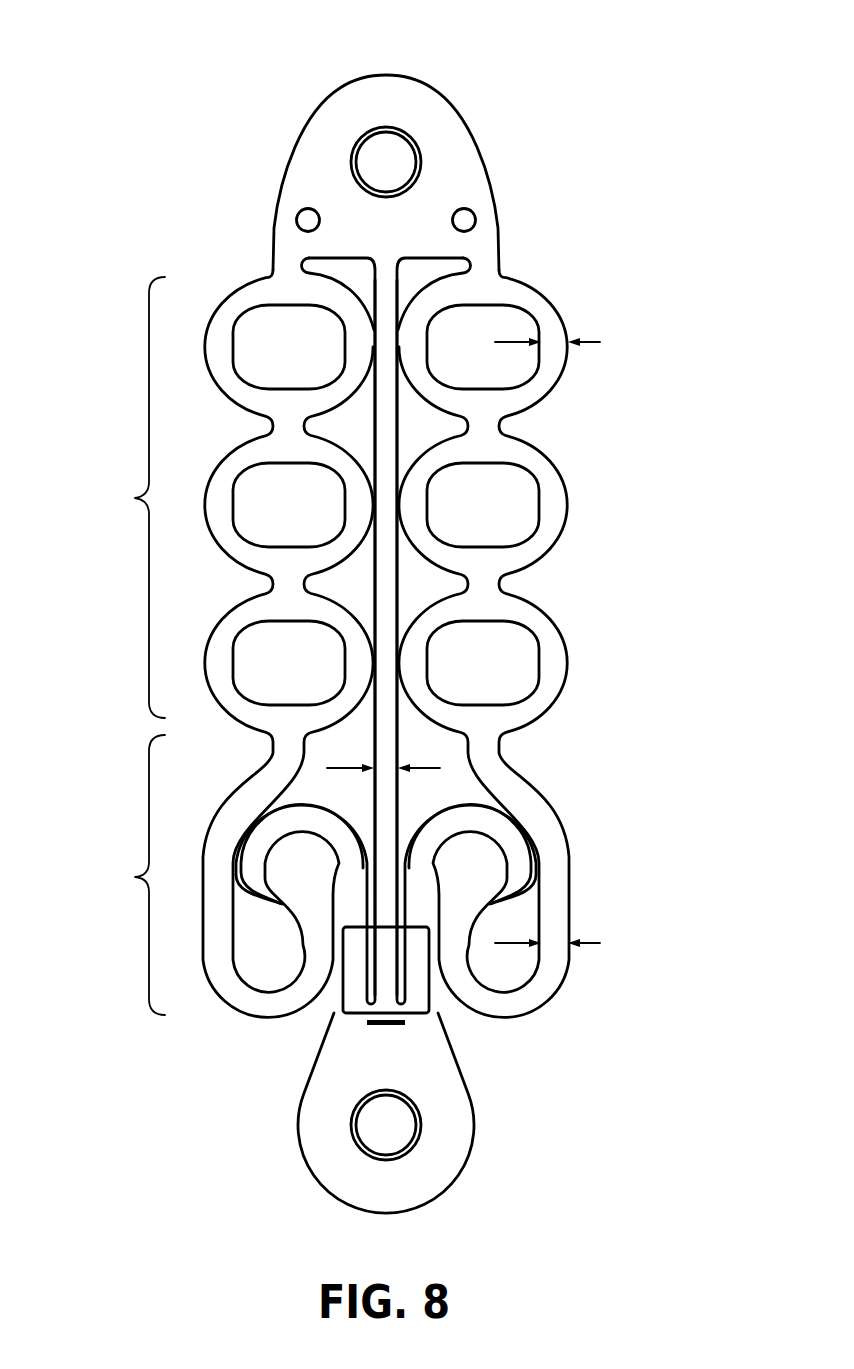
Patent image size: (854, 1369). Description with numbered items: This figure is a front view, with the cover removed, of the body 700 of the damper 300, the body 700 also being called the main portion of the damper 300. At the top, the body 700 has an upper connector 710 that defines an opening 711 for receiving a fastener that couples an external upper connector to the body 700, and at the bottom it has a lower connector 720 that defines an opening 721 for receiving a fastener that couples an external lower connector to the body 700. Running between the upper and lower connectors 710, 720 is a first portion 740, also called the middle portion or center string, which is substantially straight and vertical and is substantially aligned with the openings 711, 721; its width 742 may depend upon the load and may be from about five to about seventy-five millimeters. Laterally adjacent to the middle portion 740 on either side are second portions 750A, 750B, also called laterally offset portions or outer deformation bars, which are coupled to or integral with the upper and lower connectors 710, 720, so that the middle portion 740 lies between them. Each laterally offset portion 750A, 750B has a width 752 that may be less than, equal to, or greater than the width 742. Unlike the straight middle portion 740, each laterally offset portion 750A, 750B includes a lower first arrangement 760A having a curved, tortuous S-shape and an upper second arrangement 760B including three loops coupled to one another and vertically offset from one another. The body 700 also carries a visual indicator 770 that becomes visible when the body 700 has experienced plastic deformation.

The damper 300 is at (372, 615).
The body 700 is at (379, 615).
The upper connector 710 is at (409, 143).
The opening 711 is at (386, 127).
The lower connector 720 is at (400, 1113).
The opening 721 is at (370, 1158).
The first portion 740 is at (390, 435).
The width 742 is at (428, 766).
The second portion 750A is at (226, 256).
The second portion 750B is at (550, 254).
The width 752 is at (575, 643).
The first arrangement 760A is at (322, 880).
The second arrangement 760B is at (322, 497).
The visual indicator 770 is at (392, 1036).